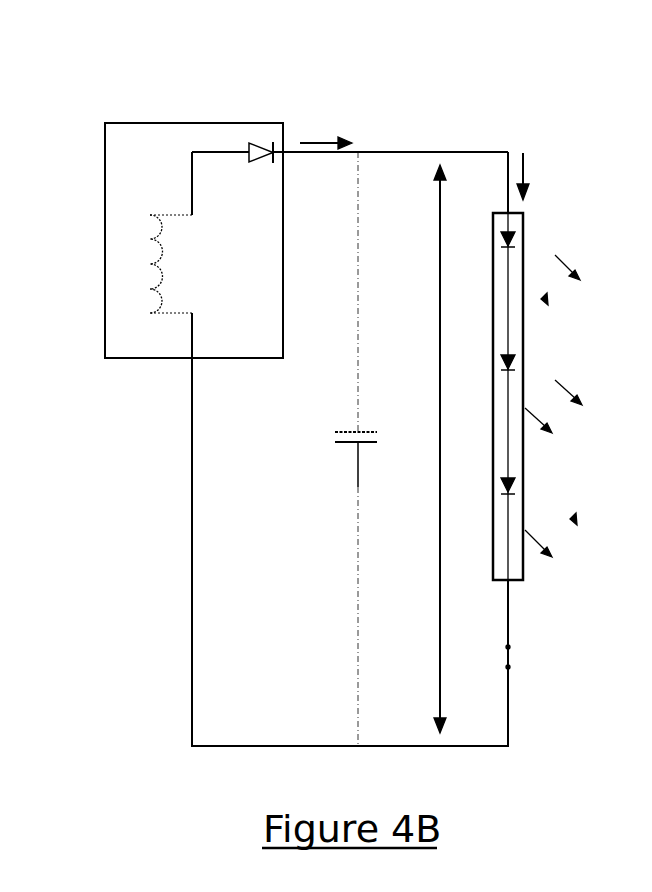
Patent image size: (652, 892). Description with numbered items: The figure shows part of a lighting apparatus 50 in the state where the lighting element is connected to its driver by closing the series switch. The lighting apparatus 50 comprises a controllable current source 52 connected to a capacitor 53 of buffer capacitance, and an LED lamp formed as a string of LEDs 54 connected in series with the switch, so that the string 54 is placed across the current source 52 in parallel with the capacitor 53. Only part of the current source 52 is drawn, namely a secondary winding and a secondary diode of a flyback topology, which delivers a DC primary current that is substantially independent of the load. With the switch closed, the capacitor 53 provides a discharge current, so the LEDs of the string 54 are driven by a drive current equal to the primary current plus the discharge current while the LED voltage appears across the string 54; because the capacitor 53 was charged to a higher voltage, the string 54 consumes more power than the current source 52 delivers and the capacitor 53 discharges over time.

The lighting apparatus 50 is at (155, 76).
The controllable current source 52 is at (105, 170).
The capacitor 53 is at (345, 445).
The string of LEDs 54 is at (523, 228).